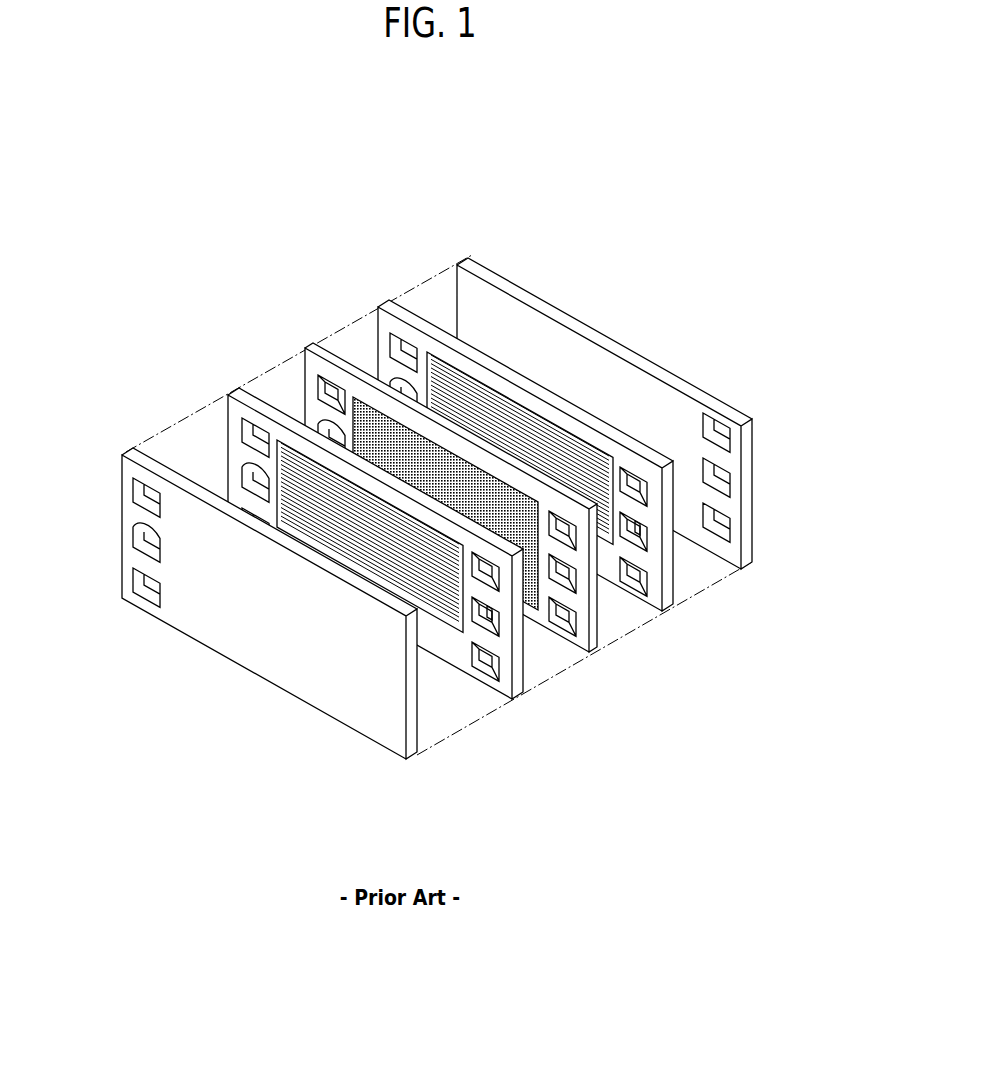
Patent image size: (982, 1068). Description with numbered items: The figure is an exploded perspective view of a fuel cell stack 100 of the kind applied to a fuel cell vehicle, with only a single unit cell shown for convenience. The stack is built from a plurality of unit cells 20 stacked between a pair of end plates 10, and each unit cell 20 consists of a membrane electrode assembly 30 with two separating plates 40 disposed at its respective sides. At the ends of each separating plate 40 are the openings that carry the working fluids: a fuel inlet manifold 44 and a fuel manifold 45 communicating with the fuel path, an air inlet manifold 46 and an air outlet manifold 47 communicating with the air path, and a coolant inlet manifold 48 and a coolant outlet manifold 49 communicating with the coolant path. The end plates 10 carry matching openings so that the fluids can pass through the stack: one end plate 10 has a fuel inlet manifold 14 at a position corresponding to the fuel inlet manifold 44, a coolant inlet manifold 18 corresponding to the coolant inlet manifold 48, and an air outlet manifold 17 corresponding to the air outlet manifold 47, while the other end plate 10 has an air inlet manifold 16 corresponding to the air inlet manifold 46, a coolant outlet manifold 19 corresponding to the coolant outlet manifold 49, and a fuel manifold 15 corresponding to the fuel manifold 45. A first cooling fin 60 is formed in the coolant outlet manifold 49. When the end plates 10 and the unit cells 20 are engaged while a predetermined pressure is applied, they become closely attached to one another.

The fuel cell stack 100 is at (396, 161).
The end plate 10 is at (602, 340).
The fuel inlet manifold 14 is at (148, 495).
The fuel manifold 15 is at (731, 529).
The air inlet manifold 16 is at (731, 439).
The air outlet manifold 17 is at (150, 587).
The coolant inlet manifold 18 is at (148, 541).
The coolant outlet manifold 19 is at (731, 484).
The unit cell 20 is at (319, 237).
The membrane electrode assembly 30 is at (454, 488).
The separating plate 40 is at (383, 307).
The fuel inlet manifold 44 is at (252, 430).
The fuel manifold 45 is at (497, 615).
The air inlet manifold 46 is at (551, 603).
The air outlet manifold 47 is at (250, 512).
The coolant inlet manifold 48 is at (252, 473).
The coolant outlet manifold 49 is at (488, 562).
The first cooling fin 60 is at (633, 535).